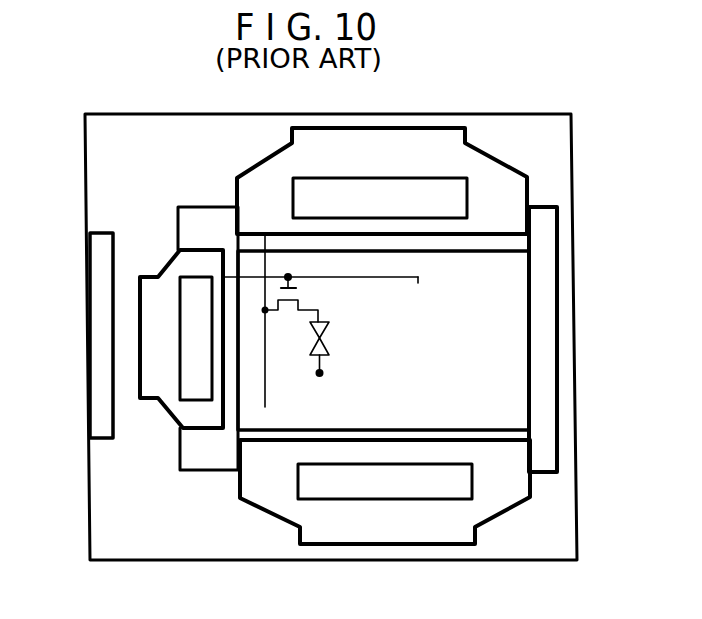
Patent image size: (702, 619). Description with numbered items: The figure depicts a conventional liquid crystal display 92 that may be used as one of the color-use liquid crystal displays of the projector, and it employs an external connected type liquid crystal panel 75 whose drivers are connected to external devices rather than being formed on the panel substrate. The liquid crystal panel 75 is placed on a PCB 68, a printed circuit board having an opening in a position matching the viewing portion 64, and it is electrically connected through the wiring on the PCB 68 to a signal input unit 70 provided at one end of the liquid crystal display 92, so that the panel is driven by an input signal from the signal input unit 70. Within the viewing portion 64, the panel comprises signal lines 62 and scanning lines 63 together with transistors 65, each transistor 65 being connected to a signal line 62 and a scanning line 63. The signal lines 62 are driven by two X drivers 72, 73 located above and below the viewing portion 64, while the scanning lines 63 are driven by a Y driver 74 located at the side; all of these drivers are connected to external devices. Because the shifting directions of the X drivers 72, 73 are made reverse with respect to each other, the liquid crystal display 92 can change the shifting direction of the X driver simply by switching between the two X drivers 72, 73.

The liquid crystal display 92 is at (566, 103).
The PCB 68 is at (575, 157).
The signal input unit 70 is at (110, 403).
The X driver 72 is at (450, 188).
The X driver 73 is at (450, 487).
The Y driver 74 is at (197, 387).
The external connected type liquid crystal panel 75 is at (538, 352).
The viewing portion 64 is at (530, 430).
The scanning lines 63 is at (407, 282).
The signal lines 62 is at (268, 397).
The transistors 65 is at (302, 293).